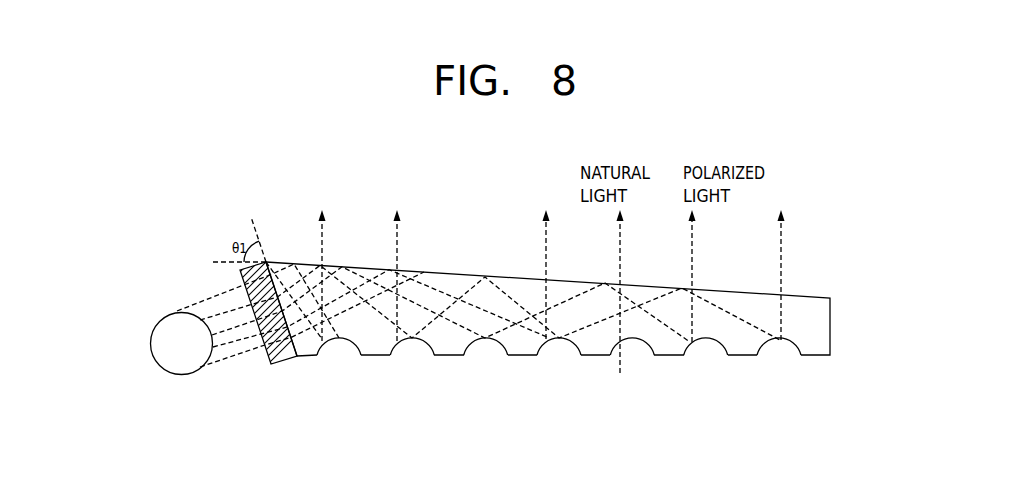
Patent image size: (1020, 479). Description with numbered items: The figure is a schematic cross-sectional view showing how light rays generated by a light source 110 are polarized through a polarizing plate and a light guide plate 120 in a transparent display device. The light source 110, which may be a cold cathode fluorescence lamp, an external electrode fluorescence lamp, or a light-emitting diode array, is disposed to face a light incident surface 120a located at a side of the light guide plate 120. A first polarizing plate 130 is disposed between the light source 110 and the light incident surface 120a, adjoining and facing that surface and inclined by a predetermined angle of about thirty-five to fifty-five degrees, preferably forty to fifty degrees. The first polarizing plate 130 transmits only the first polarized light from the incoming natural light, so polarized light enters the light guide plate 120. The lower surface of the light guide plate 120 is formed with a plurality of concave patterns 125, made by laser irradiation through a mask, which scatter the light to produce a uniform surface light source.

The light source 110 is at (178, 367).
The first polarizing plate 130 is at (282, 363).
The light incident surface 120a is at (294, 357).
The light guide plate 120 is at (821, 324).
The concave patterns 125 is at (485, 340).